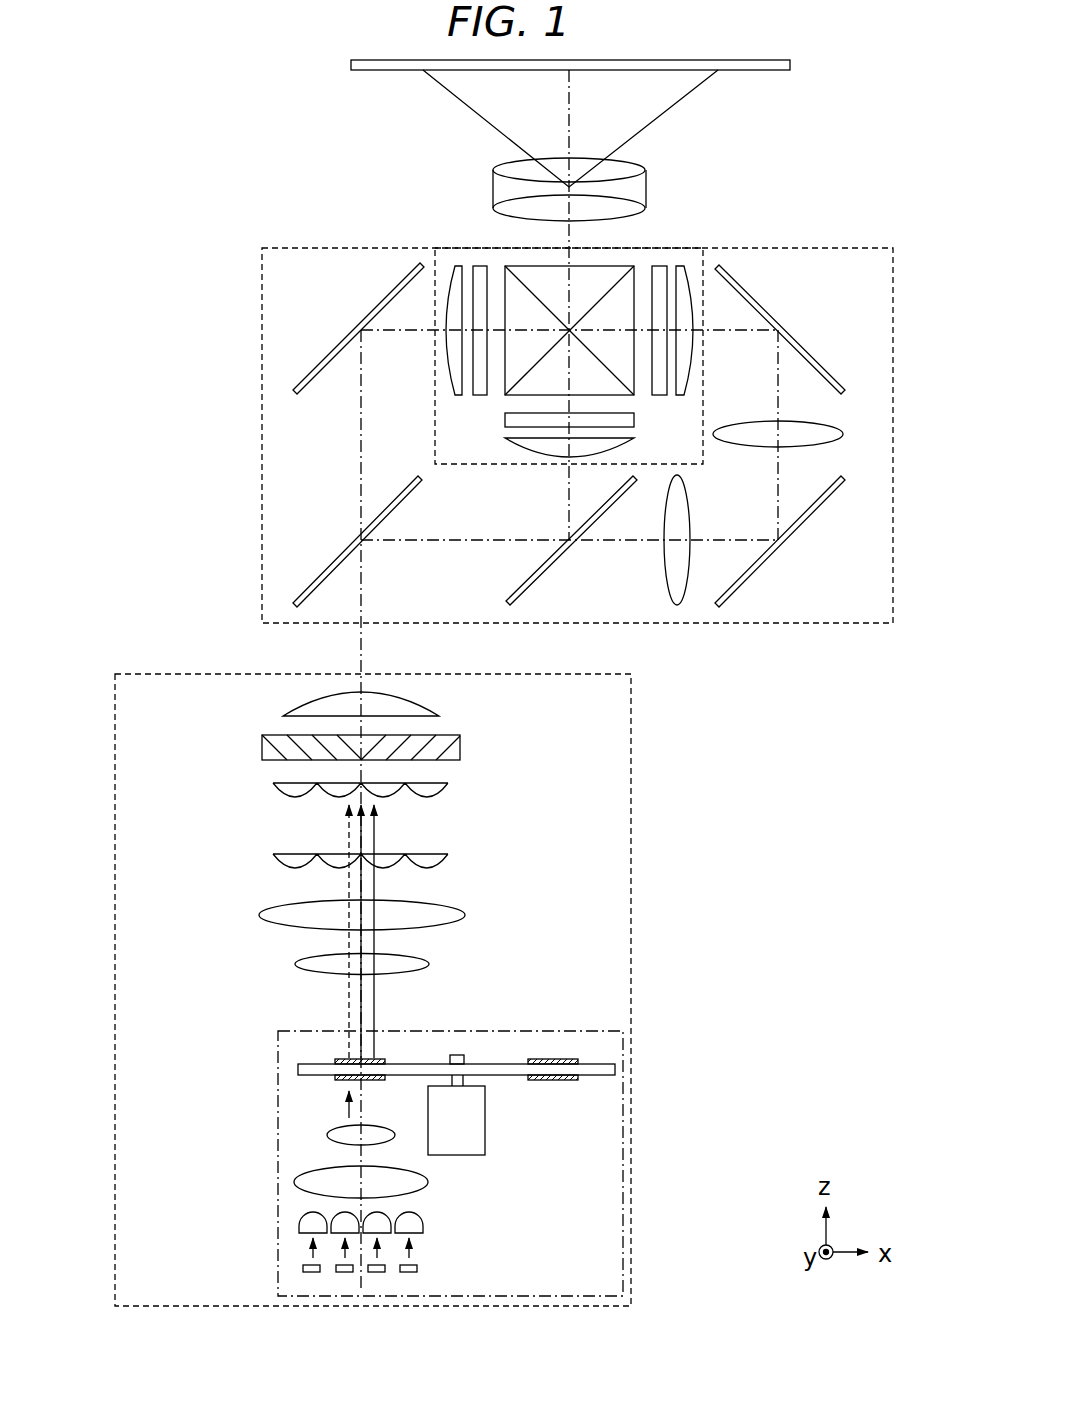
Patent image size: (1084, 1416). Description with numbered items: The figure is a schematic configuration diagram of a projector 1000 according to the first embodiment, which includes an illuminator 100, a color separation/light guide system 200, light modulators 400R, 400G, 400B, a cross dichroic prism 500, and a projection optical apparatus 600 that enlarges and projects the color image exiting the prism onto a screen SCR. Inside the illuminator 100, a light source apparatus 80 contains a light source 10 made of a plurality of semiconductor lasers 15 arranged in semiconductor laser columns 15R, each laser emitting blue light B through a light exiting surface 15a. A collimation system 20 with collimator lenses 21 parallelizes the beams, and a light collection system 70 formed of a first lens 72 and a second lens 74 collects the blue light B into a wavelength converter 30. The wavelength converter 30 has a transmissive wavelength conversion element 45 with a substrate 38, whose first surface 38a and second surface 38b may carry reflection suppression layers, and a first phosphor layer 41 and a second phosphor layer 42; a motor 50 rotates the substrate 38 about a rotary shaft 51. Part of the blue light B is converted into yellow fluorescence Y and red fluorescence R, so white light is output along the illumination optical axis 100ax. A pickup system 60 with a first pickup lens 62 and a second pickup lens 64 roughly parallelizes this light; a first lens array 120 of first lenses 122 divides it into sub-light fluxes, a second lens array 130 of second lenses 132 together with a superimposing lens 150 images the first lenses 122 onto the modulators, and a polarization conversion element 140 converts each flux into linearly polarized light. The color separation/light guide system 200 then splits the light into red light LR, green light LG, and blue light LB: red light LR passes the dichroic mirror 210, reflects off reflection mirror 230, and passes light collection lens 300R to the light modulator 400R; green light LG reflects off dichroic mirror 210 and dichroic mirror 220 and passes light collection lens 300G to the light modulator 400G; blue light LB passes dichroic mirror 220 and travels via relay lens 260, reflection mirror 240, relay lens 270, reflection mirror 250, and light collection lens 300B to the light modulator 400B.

The projector 1000 is at (208, 131).
The screen SCR is at (758, 70).
The projection optical apparatus 600 is at (493, 183).
The cross dichroic prism 500 is at (630, 270).
The light modulator 400R is at (480, 266).
The light modulator 400G is at (510, 420).
The light modulator 400B is at (659, 266).
The light collection lens 300R is at (456, 268).
The light collection lens 300G is at (510, 443).
The light collection lens 300B is at (683, 266).
The color separation/light guide system 200 is at (830, 625).
The dichroic mirror 210 is at (320, 568).
The dichroic mirror 220 is at (550, 558).
The reflection mirror 230 is at (298, 383).
The reflection mirror 240 is at (803, 526).
The reflection mirror 250 is at (842, 382).
The relay lens 260 is at (664, 556).
The relay lens 270 is at (815, 421).
The red light LR is at (414, 320).
The green light LG is at (552, 490).
The blue light LB is at (725, 320).
The illuminator 100 is at (631, 1235).
The illumination optical axis 100ax is at (361, 642).
The light source apparatus 80 is at (623, 1195).
The superimposing lens 150 is at (439, 703).
The polarization conversion element 140 is at (460, 738).
The second lens array 130 is at (448, 790).
The second lens 132 is at (275, 792).
The first lens array 120 is at (448, 858).
The first lens 122 is at (275, 862).
The pickup system 60 is at (196, 932).
The second pickup lens 64 is at (273, 925).
The first pickup lens 62 is at (305, 972).
The wavelength converter 30 is at (748, 1043).
The wavelength conversion element 45 is at (695, 1017).
The second phosphor layer 42 is at (572, 1060).
The substrate 38 is at (608, 1068).
The first surface 38a is at (498, 1077).
The second surface 38b is at (505, 1062).
The first phosphor layer 41 is at (572, 1080).
The motor 50 is at (585, 1074).
The rotary shaft 51 is at (456, 1055).
The light collection system 70 is at (206, 1100).
The second lens 74 is at (328, 1135).
The first lens 72 is at (298, 1182).
The collimation system 20 is at (334, 1234).
The collimator lens 21 is at (423, 1222).
The light source 10 is at (337, 1309).
The semiconductor laser 15 is at (312, 1273).
The light exiting surface 15a is at (420, 1257).
The semiconductor laser column 15R is at (377, 1281).
The blue light B is at (349, 826).
The yellow fluorescence Y is at (364, 822).
The red fluorescence R is at (377, 845).